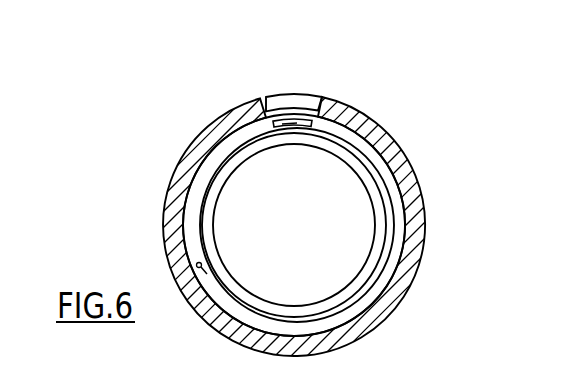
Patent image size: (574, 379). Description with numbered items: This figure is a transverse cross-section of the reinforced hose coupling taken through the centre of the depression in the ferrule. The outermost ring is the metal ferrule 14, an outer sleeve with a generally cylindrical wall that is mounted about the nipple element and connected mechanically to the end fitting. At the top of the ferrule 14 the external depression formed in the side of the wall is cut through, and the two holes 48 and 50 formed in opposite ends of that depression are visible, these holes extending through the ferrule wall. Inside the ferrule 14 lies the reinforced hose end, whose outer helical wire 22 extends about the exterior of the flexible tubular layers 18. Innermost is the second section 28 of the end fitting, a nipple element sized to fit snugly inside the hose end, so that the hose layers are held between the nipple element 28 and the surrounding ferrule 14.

The metal ferrule 14 is at (372, 133).
The hole 48 is at (321, 96).
The hole 50 is at (269, 112).
The outer helical wire 22 is at (375, 153).
The flexible tubular layers 18 is at (387, 215).
The second section 28 is at (377, 254).